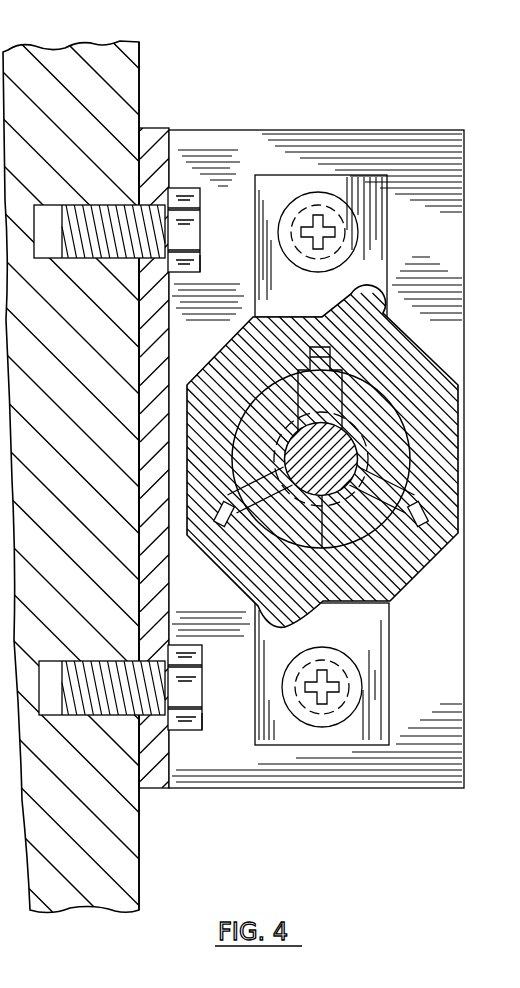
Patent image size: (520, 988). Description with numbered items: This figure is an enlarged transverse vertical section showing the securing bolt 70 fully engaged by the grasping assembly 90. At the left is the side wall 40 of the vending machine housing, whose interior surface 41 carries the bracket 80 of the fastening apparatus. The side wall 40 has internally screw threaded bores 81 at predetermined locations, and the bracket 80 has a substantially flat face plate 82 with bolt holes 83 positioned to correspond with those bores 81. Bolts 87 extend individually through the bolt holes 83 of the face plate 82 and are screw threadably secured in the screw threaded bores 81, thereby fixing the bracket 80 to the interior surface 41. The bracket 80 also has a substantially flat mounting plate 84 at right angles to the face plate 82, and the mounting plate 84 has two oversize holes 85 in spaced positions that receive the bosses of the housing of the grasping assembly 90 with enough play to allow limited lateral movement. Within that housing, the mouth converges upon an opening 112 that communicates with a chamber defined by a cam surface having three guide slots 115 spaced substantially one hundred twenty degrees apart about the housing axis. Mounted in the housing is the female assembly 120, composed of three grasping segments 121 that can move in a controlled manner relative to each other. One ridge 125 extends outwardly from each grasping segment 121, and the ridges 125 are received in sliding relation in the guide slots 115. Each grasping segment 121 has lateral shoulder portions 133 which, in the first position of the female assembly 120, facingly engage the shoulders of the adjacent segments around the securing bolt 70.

The side wall 40 is at (102, 62).
The interior surface 41 is at (140, 72).
The bracket 80 is at (231, 106).
The screw threaded bores 81 is at (54, 258).
The face plate 82 is at (168, 158).
The bolt holes 83 is at (148, 208).
The mounting plate 84 is at (440, 234).
The oversize holes 85 is at (296, 219).
The bolts 87 is at (200, 264).
The grasping assembly 90 is at (428, 344).
The securing bolt 70 is at (360, 460).
The opening 112 is at (370, 492).
The guide slots 115 is at (323, 316).
The female assembly 120 is at (463, 377).
The grasping segments 121 is at (252, 318).
The ridges 125 is at (386, 334).
The lateral shoulder portions 133 is at (210, 390).